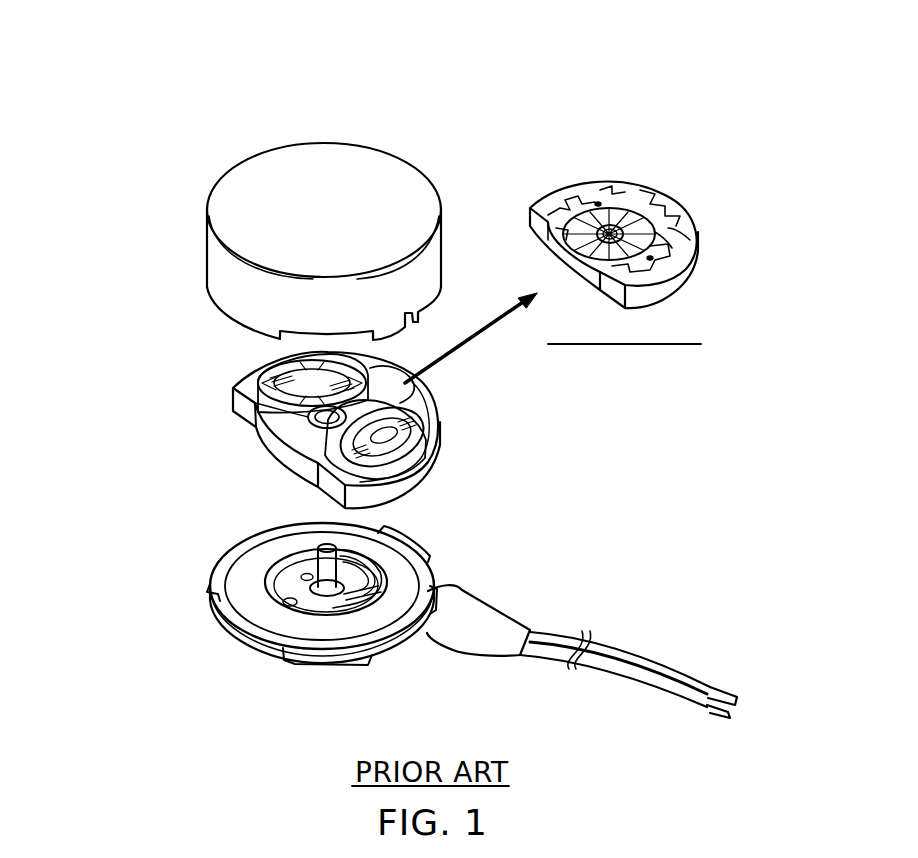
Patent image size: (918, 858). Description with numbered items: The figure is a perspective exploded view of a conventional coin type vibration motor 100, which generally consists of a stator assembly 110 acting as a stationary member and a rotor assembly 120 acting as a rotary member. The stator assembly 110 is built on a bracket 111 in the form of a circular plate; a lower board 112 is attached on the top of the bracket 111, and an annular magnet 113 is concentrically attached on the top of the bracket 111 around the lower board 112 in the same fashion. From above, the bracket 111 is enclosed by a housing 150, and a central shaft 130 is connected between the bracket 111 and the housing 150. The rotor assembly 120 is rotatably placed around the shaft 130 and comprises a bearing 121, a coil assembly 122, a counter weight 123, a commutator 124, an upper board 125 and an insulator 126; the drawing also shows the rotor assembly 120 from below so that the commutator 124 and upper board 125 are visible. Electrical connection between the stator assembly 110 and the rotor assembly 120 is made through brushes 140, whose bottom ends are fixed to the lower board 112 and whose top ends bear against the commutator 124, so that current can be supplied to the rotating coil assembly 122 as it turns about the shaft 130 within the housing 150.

The coin type vibration motor 100 is at (422, 58).
The stator assembly 110 is at (197, 556).
The bracket 111 is at (243, 625).
The lower board 112 is at (278, 598).
The annular magnet 113 is at (233, 587).
The rotor assembly 120 is at (228, 373).
The bearing 121 is at (308, 421).
The coil assembly 122 is at (413, 428).
The counter weight 123 is at (417, 385).
The commutator 124 is at (638, 225).
The upper board 125 is at (682, 243).
The insulator 126 is at (300, 445).
The shaft 130 is at (320, 547).
The brushes 140 is at (363, 551).
The housing 150 is at (200, 200).